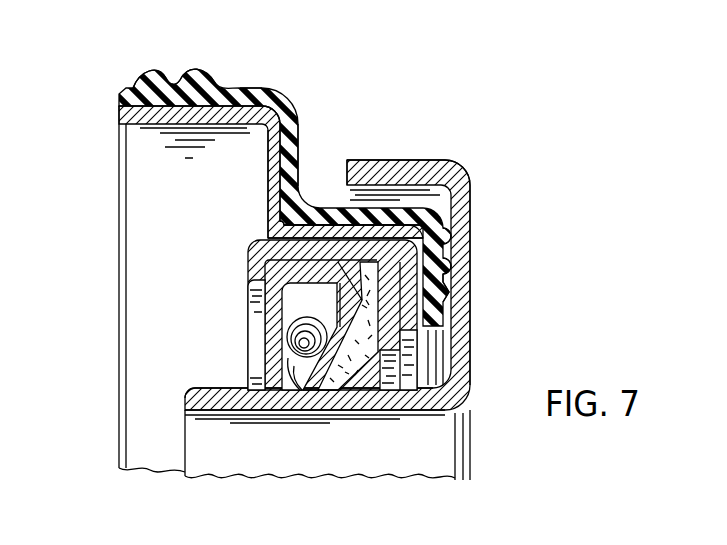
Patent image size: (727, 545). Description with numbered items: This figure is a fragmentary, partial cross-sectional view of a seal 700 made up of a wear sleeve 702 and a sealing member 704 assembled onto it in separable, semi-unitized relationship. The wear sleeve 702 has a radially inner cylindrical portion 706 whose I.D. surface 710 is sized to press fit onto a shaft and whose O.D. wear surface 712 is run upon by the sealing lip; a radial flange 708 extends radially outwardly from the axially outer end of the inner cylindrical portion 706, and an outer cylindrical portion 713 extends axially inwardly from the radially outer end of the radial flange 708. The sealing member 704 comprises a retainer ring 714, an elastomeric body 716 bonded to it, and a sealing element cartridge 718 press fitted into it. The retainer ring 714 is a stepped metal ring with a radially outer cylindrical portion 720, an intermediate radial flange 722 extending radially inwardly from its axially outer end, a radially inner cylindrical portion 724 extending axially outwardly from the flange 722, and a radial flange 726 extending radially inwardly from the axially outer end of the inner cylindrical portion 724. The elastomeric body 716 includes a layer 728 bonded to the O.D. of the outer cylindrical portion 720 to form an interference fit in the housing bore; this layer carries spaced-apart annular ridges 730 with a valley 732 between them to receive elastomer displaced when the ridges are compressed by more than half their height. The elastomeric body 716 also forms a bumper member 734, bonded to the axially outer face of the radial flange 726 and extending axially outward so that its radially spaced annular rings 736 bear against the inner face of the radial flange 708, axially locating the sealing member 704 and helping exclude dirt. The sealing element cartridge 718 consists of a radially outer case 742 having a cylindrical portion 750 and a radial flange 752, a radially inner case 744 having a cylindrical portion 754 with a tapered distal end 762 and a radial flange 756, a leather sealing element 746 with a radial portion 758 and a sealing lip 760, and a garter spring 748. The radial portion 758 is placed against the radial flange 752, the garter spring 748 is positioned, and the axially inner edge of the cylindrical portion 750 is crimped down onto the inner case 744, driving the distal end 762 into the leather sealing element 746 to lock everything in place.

The seal 700 is at (415, 129).
The wear sleeve 702 is at (478, 296).
The sealing member 704 is at (293, 86).
The radially inner cylindrical portion 706 is at (342, 402).
The radial flange 708 is at (463, 323).
The I.D. surface 710 is at (237, 411).
The O.D. wear surface 712 is at (215, 383).
The outer cylindrical portion 713 is at (380, 166).
The retainer ring 714 is at (263, 186).
The elastomeric body 716 is at (303, 130).
The sealing element cartridge 718 is at (252, 330).
The radially outer cylindrical portion 720 is at (160, 116).
The intermediate radial flange 722 is at (270, 150).
The radially inner cylindrical portion 724 is at (352, 188).
The radial flange 726 is at (442, 300).
The layer of elastomer 728 is at (240, 88).
The annular ridges 730 is at (200, 68).
The valley 732 is at (172, 84).
The elastomeric bumper member 734 is at (462, 182).
The annular rings 736 is at (447, 236).
The radially outer case 742 is at (253, 255).
The radially inner case 744 is at (256, 308).
The leather sealing element 746 is at (367, 412).
The garter spring 748 is at (288, 337).
The cylindrical portion 750 is at (340, 232).
The radial flange 752 is at (397, 333).
The cylindrical portion 754 is at (259, 283).
The radial flange 756 is at (284, 306).
The radial portion 758 is at (448, 283).
The sealing lip 760 is at (300, 393).
The distal end 762 is at (319, 392).